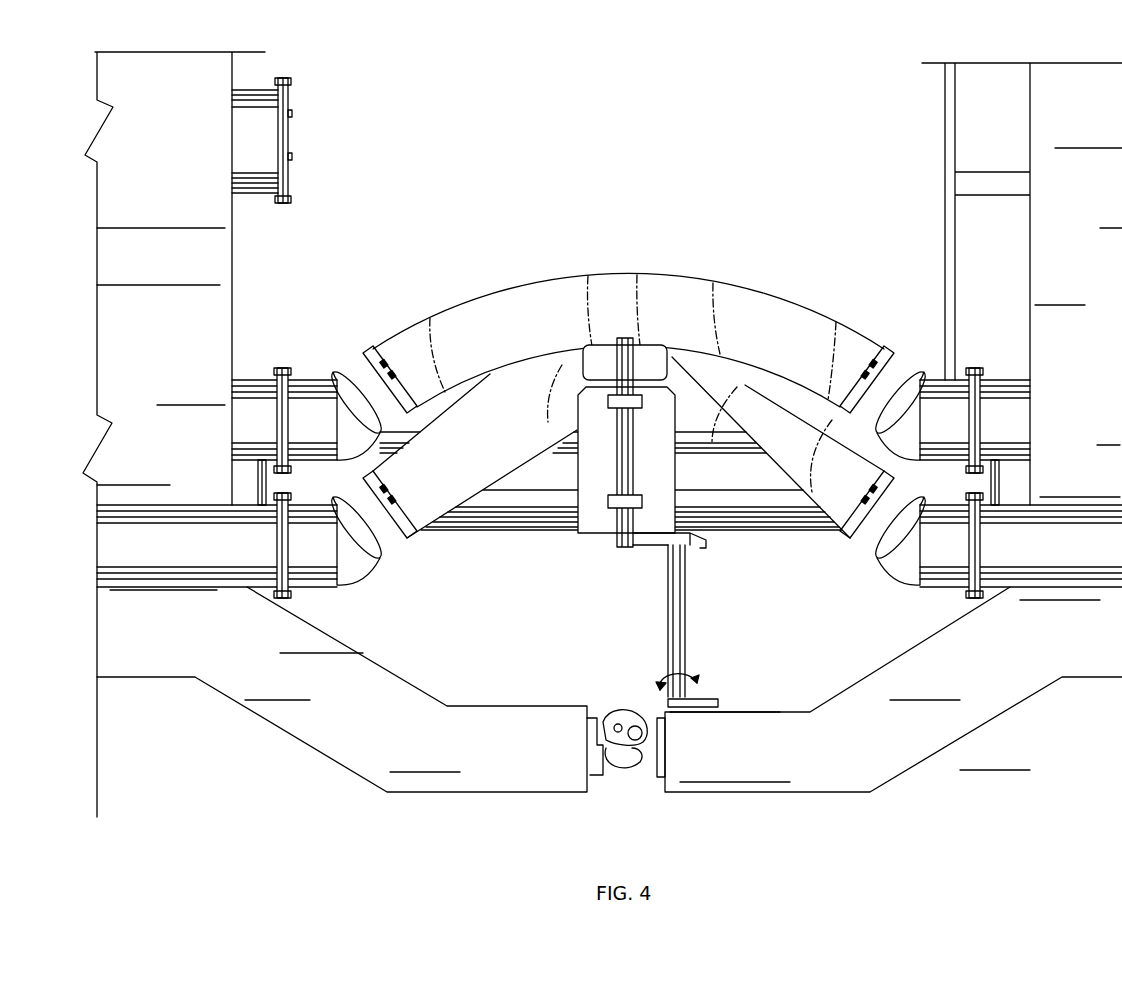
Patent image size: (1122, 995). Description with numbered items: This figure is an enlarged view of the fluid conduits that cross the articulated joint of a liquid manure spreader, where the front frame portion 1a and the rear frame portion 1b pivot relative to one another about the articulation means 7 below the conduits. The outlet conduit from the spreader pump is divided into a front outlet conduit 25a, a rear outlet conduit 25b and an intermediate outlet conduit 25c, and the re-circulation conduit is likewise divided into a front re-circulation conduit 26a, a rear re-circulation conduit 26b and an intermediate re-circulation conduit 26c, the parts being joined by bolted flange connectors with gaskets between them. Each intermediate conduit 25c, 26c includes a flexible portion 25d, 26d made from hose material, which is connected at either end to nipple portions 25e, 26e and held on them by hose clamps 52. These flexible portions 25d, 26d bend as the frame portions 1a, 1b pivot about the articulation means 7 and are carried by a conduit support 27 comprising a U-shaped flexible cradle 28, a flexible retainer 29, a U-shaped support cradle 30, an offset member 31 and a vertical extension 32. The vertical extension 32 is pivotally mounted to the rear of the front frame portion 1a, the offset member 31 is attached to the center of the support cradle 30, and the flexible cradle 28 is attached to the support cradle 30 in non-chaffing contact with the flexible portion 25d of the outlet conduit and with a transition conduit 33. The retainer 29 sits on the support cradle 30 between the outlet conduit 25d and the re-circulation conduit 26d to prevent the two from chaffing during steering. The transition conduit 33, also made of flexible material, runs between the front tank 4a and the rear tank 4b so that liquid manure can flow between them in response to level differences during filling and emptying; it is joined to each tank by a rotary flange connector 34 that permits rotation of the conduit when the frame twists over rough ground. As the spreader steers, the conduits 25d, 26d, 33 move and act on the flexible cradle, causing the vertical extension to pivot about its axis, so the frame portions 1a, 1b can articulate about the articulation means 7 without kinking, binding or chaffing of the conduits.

The front frame portion 1a is at (893, 682).
The rear frame portion 1b is at (385, 694).
The front tank 4a is at (1053, 267).
The rear tank 4b is at (213, 299).
The articulation means 7 is at (605, 705).
The front outlet conduit 25a is at (1078, 548).
The rear outlet conduit 25b is at (190, 555).
The intermediate outlet conduit 25c is at (770, 385).
The flexible portion of outlet conduit 25d is at (700, 390).
The nipple portions of outlet conduit 25e is at (308, 530).
The front re-circulation conduit 26a is at (1005, 415).
The rear re-circulation conduit 26b is at (248, 410).
The intermediate re-circulation conduit 26c is at (413, 306).
The flexible portion of re-circulation conduit 26d is at (535, 300).
The nipple portions of re-circulation conduit 26e is at (305, 415).
The conduit support 27 is at (711, 568).
The U-shaped flexible cradle 28 is at (590, 520).
The flexible retainer 29 is at (650, 355).
The U-shaped support cradle 30 is at (617, 545).
The offset member 31 is at (650, 545).
The vertical extension 32 is at (666, 615).
The transition conduit 33 is at (530, 480).
The rotary flange connector 34 is at (262, 485).
The hose clamps 52 is at (390, 370).